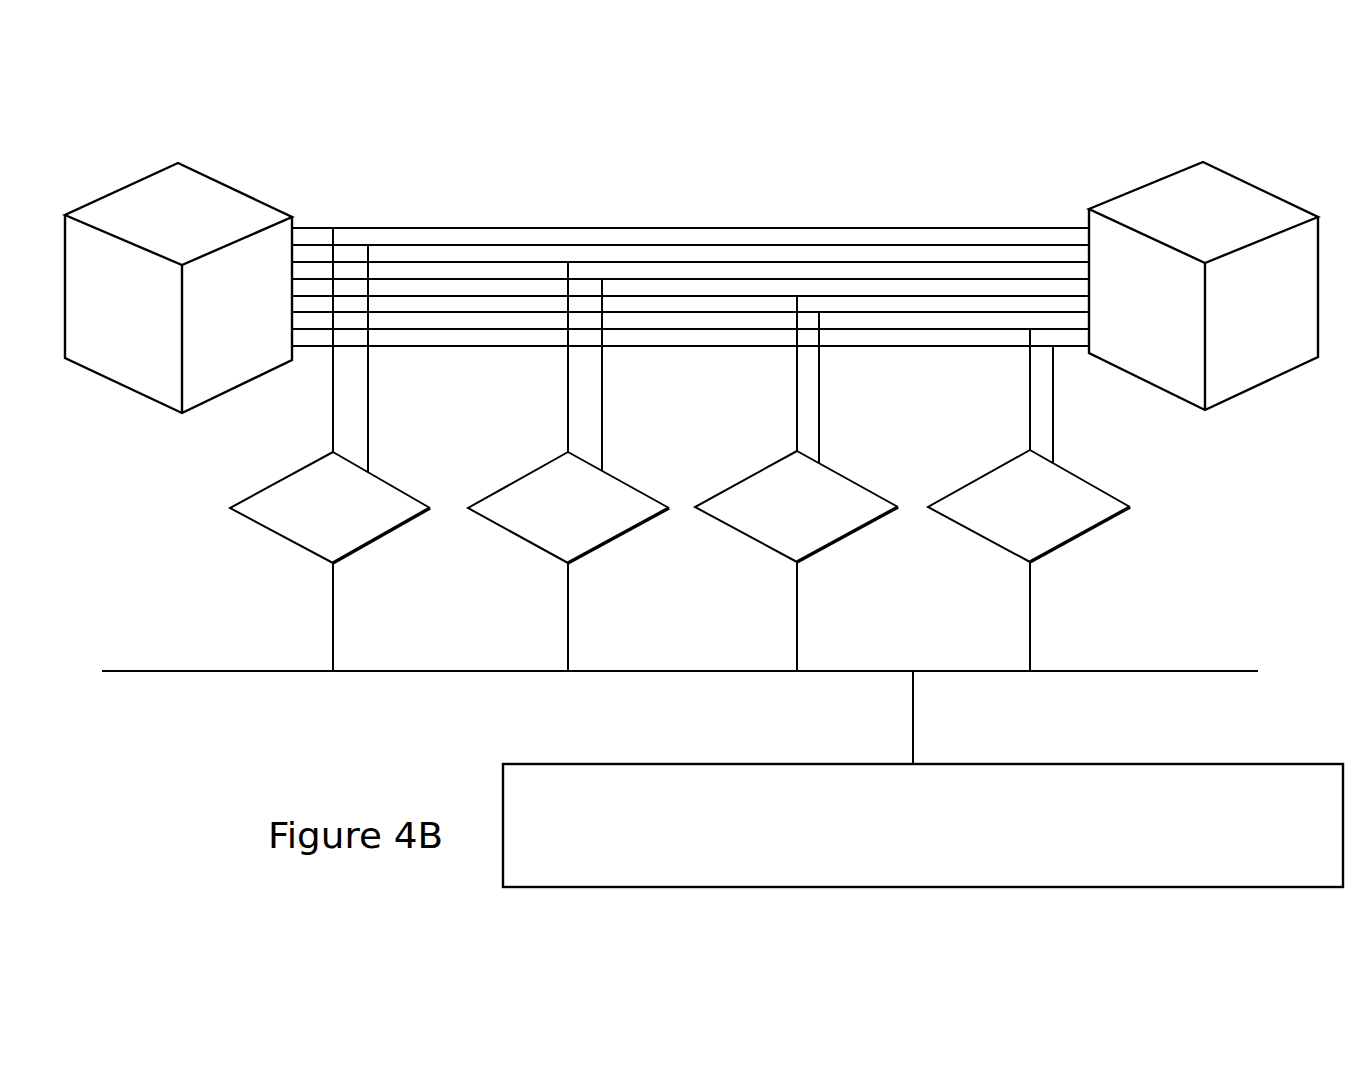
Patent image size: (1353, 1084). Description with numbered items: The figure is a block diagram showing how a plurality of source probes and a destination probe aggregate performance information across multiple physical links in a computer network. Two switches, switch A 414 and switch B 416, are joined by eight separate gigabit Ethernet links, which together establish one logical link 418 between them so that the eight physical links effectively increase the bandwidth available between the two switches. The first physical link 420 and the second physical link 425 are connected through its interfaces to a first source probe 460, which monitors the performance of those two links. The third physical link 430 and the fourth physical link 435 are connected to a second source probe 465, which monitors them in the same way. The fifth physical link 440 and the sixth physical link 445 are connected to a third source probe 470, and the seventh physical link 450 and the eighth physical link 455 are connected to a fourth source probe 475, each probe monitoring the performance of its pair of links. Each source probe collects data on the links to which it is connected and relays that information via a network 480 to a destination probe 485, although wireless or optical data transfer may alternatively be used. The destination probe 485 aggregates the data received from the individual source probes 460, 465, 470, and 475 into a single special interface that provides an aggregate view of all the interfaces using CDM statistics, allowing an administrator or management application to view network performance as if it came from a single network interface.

The switch A 414 is at (203, 176).
The switch B 416 is at (1230, 174).
The logical link 418 is at (690, 267).
The physical link 1 420 is at (546, 228).
The physical link 2 425 is at (506, 245).
The physical link 3 430 is at (758, 262).
The physical link 4 435 is at (722, 279).
The physical link 5 440 is at (650, 296).
The physical link 6 445 is at (625, 313).
The physical link 7 450 is at (870, 313).
The physical link 8 455 is at (848, 329).
The first source probe 460 is at (397, 532).
The second source probe 465 is at (632, 530).
The third source probe 470 is at (860, 532).
The fourth source probe 475 is at (1092, 532).
The network 480 is at (1205, 666).
The destination probe 485 is at (1294, 763).